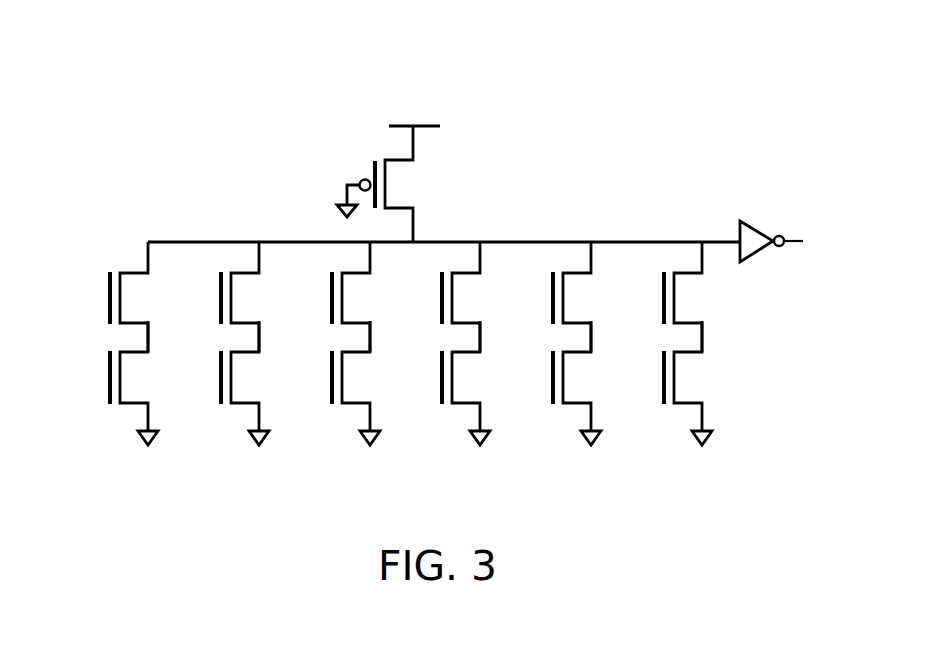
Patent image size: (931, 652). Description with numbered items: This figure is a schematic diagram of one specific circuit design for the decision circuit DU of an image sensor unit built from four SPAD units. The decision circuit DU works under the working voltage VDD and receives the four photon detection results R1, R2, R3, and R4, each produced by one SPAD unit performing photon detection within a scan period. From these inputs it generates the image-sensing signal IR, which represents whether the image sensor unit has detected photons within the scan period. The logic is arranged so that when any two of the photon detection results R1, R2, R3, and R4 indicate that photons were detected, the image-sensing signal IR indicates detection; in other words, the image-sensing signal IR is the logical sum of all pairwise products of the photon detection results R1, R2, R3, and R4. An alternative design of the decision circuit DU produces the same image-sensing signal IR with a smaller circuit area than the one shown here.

The decision circuit DU is at (262, 105).
The working voltage VDD is at (413, 113).
The image-sensing signal IR is at (783, 241).
The photon detection result R1 is at (110, 298).
The photon detection result R2 is at (110, 378).
The photon detection result R3 is at (221, 378).
The photon detection result R4 is at (332, 378).